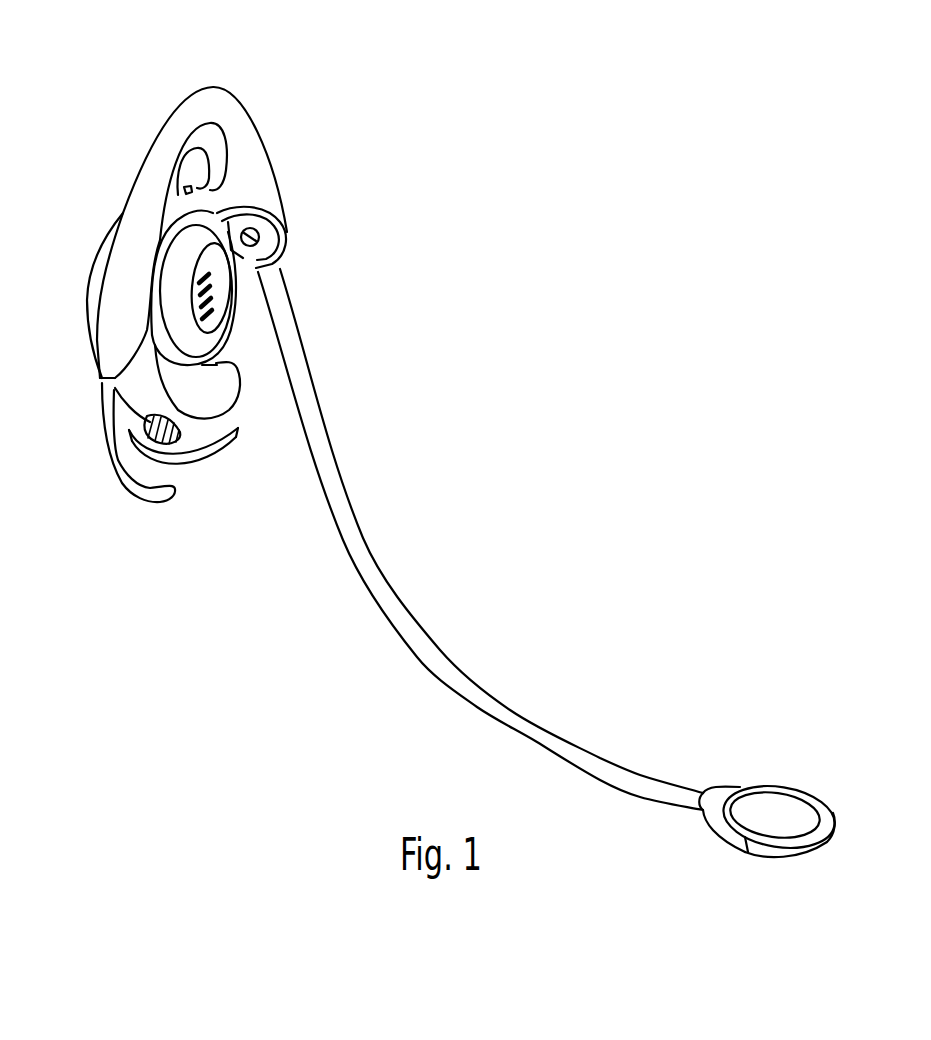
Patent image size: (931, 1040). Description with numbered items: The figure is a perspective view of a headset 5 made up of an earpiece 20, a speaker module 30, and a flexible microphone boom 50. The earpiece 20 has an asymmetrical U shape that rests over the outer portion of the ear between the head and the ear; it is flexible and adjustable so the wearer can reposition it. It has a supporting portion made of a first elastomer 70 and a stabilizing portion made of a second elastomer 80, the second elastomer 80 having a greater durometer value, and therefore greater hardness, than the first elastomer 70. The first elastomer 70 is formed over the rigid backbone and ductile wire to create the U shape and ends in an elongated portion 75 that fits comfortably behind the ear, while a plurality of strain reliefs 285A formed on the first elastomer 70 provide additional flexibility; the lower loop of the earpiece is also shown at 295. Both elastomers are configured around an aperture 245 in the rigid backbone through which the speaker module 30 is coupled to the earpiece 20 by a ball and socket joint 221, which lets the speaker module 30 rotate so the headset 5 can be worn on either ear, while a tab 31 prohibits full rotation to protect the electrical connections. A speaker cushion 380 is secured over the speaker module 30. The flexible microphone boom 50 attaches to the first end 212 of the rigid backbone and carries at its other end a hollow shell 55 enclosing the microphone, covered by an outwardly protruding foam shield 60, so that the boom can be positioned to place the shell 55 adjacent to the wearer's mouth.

The headset 5 is at (340, 352).
The earpiece 20 is at (218, 96).
The speaker module 30 is at (228, 340).
The tab 31 is at (215, 215).
The flexible microphone boom 50 is at (354, 525).
The hollow shell 55 is at (803, 857).
The foam shield 60 is at (787, 806).
The first elastomer 70 is at (218, 402).
The elongated portion 75 is at (205, 462).
The second elastomer 80 is at (255, 162).
The first end 212 is at (284, 238).
The ball and socket joint 221 is at (243, 229).
The aperture 245 is at (259, 244).
The strain reliefs 285A is at (150, 422).
The ear hook strap 295 is at (133, 495).
The speaker cushion 380 is at (167, 280).